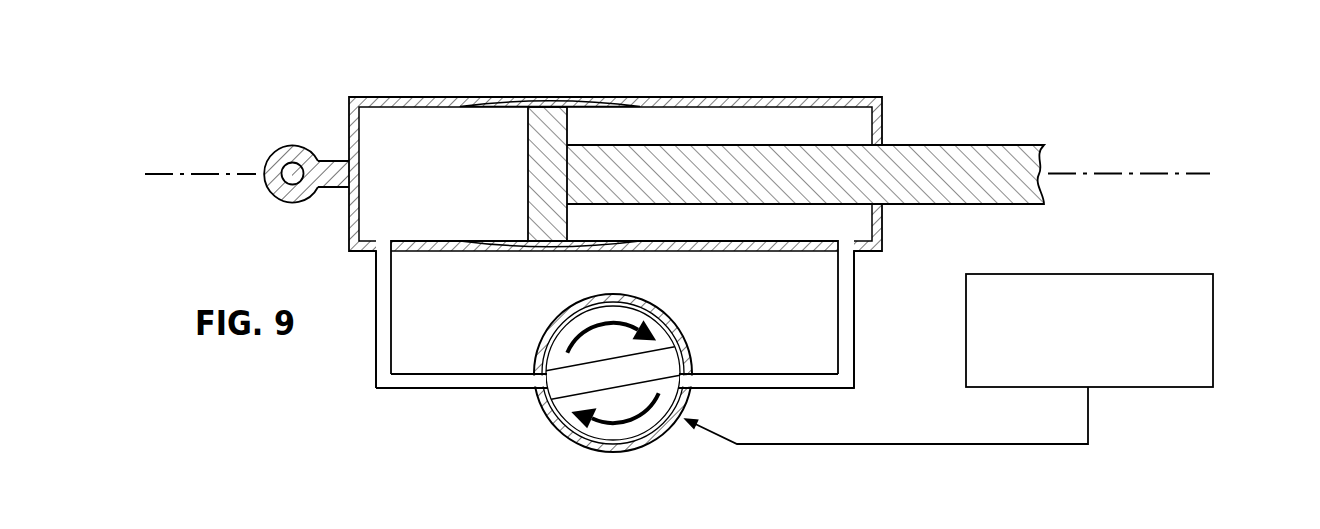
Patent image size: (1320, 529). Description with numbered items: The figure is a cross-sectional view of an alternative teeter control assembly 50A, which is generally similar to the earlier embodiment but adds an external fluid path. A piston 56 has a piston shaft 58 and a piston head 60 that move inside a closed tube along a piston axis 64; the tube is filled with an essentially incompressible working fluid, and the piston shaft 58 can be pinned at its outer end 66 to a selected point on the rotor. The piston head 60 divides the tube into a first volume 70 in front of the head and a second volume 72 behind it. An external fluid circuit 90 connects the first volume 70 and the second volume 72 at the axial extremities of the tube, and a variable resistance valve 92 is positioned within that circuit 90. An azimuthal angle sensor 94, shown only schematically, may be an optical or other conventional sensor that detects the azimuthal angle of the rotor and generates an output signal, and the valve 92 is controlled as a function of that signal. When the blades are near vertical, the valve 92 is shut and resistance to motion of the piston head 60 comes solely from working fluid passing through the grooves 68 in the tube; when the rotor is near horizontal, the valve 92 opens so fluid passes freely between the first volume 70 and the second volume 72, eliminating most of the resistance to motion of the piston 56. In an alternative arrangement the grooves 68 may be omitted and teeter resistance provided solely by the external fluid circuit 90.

The teeter control assembly 50A is at (1048, 71).
The piston 56 is at (916, 141).
The piston shaft 58 is at (998, 152).
The piston head 60 is at (555, 112).
The piston axis 64 is at (1182, 173).
The clevis eye 66 is at (293, 145).
The grooves 68 is at (507, 103).
The first volume 70 is at (423, 187).
The second volume 72 is at (705, 118).
The external fluid circuit 90 is at (424, 403).
The variable resistance valve 92 is at (590, 442).
The azimuthal angle sensor 94 is at (1090, 273).